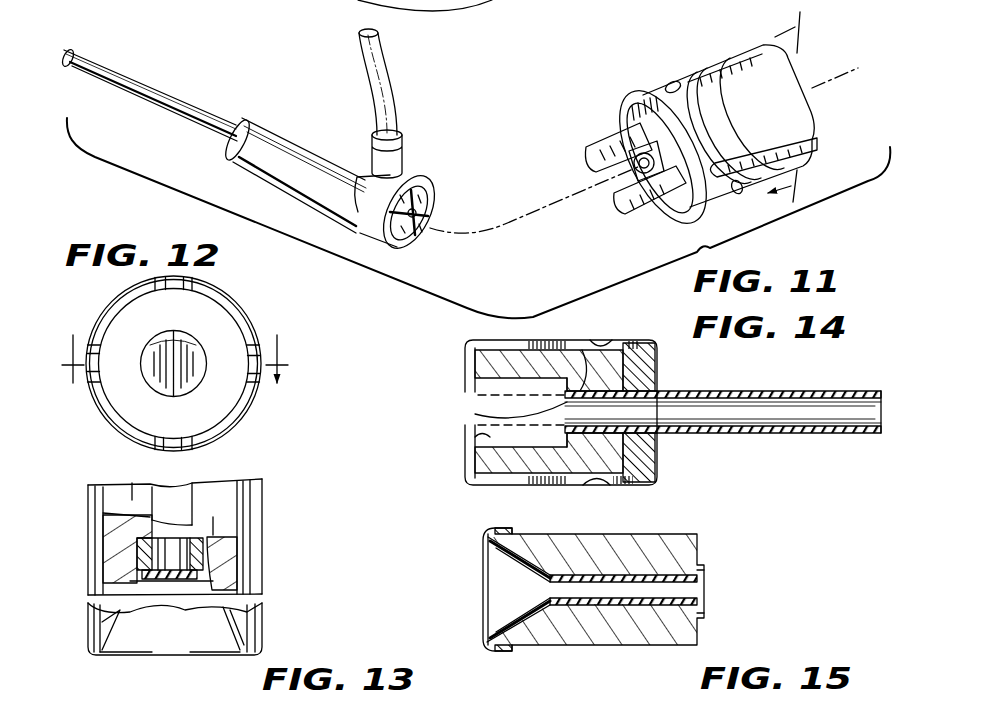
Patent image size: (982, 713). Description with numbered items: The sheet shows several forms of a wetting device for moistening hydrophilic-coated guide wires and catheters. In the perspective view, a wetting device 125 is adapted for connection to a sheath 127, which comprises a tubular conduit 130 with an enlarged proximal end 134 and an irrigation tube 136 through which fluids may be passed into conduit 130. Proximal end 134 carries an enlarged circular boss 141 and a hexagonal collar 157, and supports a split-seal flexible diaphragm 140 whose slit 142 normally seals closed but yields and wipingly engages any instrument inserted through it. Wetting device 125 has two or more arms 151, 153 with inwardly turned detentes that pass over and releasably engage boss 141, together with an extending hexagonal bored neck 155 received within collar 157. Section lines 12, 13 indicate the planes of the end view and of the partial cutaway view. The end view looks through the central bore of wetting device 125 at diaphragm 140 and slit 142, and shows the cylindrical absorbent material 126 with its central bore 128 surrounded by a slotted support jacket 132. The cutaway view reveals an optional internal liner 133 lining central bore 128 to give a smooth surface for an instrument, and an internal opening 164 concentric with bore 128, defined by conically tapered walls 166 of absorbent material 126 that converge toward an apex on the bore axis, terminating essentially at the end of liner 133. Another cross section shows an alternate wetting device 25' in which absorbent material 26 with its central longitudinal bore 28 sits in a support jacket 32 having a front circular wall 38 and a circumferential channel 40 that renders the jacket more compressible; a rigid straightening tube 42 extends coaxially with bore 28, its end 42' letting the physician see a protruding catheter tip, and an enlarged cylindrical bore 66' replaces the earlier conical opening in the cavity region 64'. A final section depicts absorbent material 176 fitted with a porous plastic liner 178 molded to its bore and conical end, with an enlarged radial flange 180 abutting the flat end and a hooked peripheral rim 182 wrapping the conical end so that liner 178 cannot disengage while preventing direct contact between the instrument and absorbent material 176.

In FIG. 11, the section line 12- 12 is at (809, 102).
In FIG. 12, the section line 13- 13 is at (179, 341).
In FIG. 14, the wetting device 25' is at (608, 412).
In FIG. 14, the absorbent material 26 is at (612, 483).
In FIG. 14, the central longitudinal bore 28 is at (582, 345).
In FIG. 14, the support jacket 32 is at (543, 483).
In FIG. 14, the front circular wall 38 is at (657, 366).
In FIG. 14, the circumferential channel 40 is at (600, 342).
In FIG. 14, the straightening tube 42 is at (723, 394).
In FIG. 14, the end of straightening tube 42' is at (484, 413).
In FIG. 14, the cavity 64' is at (481, 402).
In FIG. 14, the enlarged cylindrical bore 66' is at (451, 448).
In FIG. 11, the wetting device 125 is at (650, 86).
In FIG. 12, the wetting device 125 is at (264, 294).
In FIG. 13, the wetting device 125 is at (271, 505).
In FIG. 11, the absorbent material 126 is at (817, 136).
In FIG. 12, the absorbent material 126 is at (218, 413).
In FIG. 13, the absorbent material 126 is at (233, 575).
In FIG. 11, the sheath 127 is at (207, 98).
In FIG. 12, the central bore 128 is at (148, 376).
In FIG. 13, the central bore 128 is at (237, 560).
In FIG. 11, the tubular conduit 130 is at (138, 54).
In FIG. 11, the slotted support jacket 132 is at (797, 80).
In FIG. 12, the slotted support jacket 132 is at (222, 298).
In FIG. 13, the slotted support jacket 132 is at (260, 482).
In FIG. 13, the internal liner 133 is at (180, 543).
In FIG. 11, the enlarged proximal end 134 is at (336, 146).
In FIG. 11, the irrigation tube 136 is at (398, 80).
In FIG. 11, the split-seal flexible diaphragm 140 is at (414, 233).
In FIG. 12, the split-seal flexible diaphragm 140 is at (193, 350).
In FIG. 11, the circular boss 141 is at (409, 172).
In FIG. 12, the slit 142 is at (180, 343).
In FIG. 11, the arm 151 is at (598, 134).
In FIG. 11, the arm 153 is at (650, 213).
In FIG. 11, the bored neck 155 is at (630, 114).
In FIG. 11, the collar 157 is at (428, 212).
In FIG. 13, the internal opening 164 is at (183, 628).
In FIG. 13, the conically tapered walls 166 is at (120, 648).
In FIG. 15, the absorbent material 176 is at (677, 533).
In FIG. 15, the liner 178 is at (496, 620).
In FIG. 15, the radial flange 180 is at (707, 578).
In FIG. 15, the hooked peripheral rim 182 is at (497, 527).